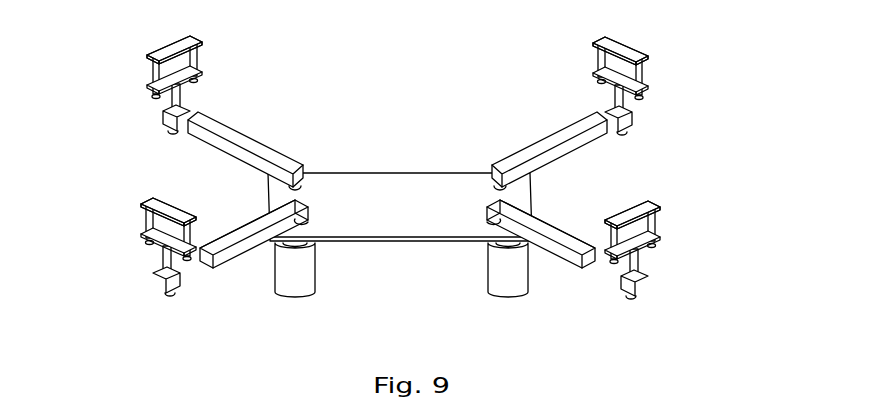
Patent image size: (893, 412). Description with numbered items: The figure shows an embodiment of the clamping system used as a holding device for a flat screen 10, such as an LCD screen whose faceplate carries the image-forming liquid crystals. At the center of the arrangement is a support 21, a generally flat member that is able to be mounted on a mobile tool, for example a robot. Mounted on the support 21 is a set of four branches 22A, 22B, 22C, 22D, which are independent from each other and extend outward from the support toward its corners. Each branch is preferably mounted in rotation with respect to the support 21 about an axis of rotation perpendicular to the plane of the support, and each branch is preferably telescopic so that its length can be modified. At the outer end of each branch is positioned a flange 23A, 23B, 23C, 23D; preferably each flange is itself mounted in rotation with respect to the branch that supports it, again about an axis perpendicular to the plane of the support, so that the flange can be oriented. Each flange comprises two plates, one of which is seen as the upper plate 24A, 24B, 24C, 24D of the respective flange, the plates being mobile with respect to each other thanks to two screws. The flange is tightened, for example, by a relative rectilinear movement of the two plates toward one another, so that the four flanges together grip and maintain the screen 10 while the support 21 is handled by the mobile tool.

The flat screen 10 is at (357, 265).
The support 21 is at (412, 223).
The branch 22A is at (264, 137).
The branch 22B is at (507, 148).
The branch 22C is at (566, 269).
The branch 22D is at (241, 269).
The flange 23A is at (206, 57).
The flange 23B is at (586, 57).
The flange 23C is at (664, 221).
The flange 23D is at (136, 221).
The plate 24A is at (140, 59).
The plate 24B is at (655, 60).
The plate 24C is at (667, 196).
The plate 24D is at (138, 202).